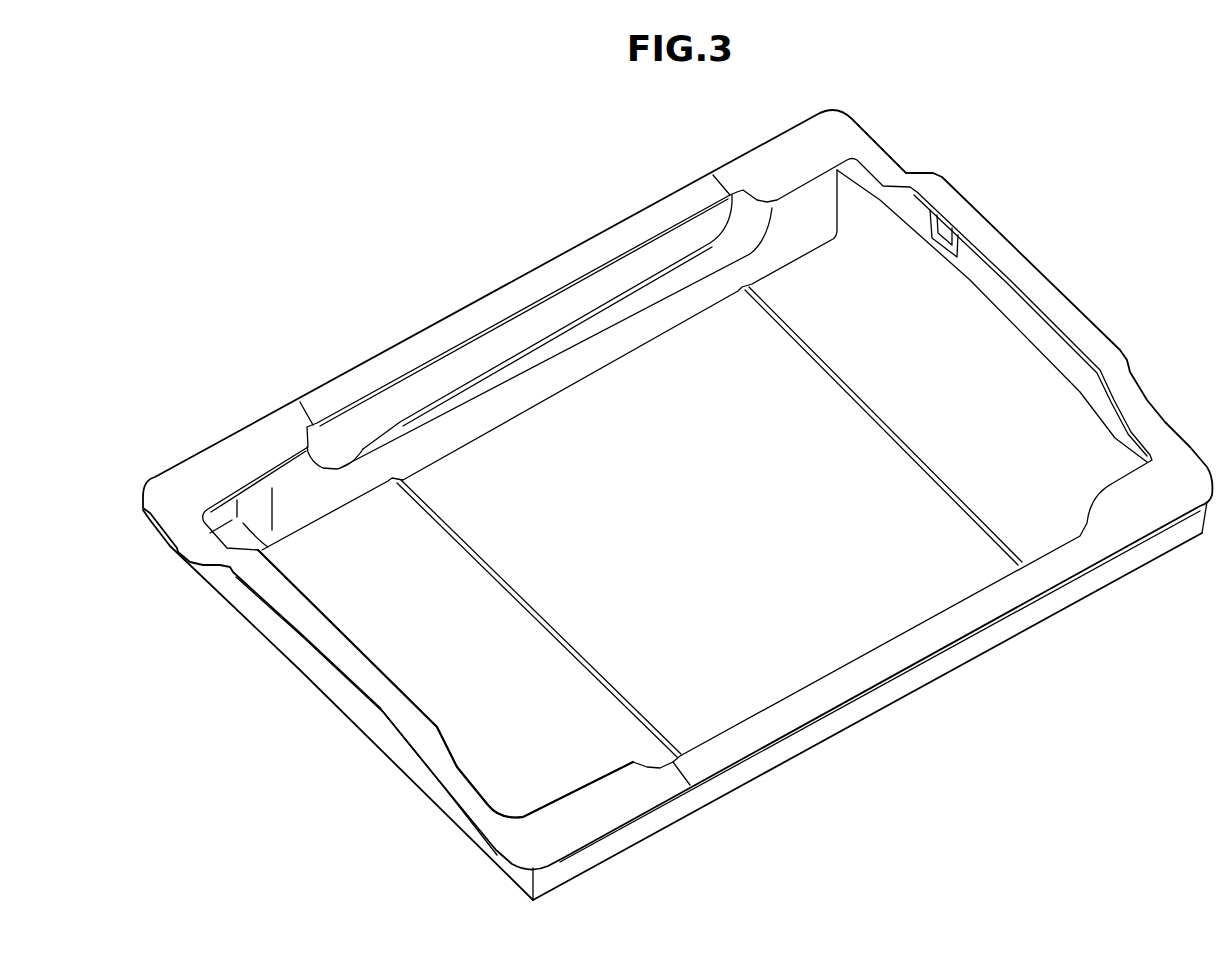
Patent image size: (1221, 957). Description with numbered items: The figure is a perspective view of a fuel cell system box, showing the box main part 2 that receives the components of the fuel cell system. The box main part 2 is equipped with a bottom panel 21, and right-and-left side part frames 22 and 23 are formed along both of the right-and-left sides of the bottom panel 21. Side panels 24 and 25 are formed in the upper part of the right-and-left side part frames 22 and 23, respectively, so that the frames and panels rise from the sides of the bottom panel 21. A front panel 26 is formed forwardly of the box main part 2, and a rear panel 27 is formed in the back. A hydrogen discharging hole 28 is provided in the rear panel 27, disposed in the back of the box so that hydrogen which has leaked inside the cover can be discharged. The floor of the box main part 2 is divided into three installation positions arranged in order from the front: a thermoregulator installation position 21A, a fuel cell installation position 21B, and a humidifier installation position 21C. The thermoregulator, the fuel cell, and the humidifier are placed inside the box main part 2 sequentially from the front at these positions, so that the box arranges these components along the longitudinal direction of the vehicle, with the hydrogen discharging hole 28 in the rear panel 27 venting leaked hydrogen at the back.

The box main part 2 is at (1103, 318).
The bottom panel 21 is at (559, 464).
The thermoregulator installation position 21A is at (455, 653).
The fuel cell installation position 21B is at (747, 667).
The humidifier installation position 21C is at (1023, 450).
The side part frame 22 is at (352, 448).
The side part frame 23 is at (948, 685).
The side panel 24 is at (567, 270).
The side panel 25 is at (1003, 596).
The front panel 26 is at (253, 607).
The rear panel 27 is at (1023, 317).
The hydrogen discharging hole 28 is at (945, 220).